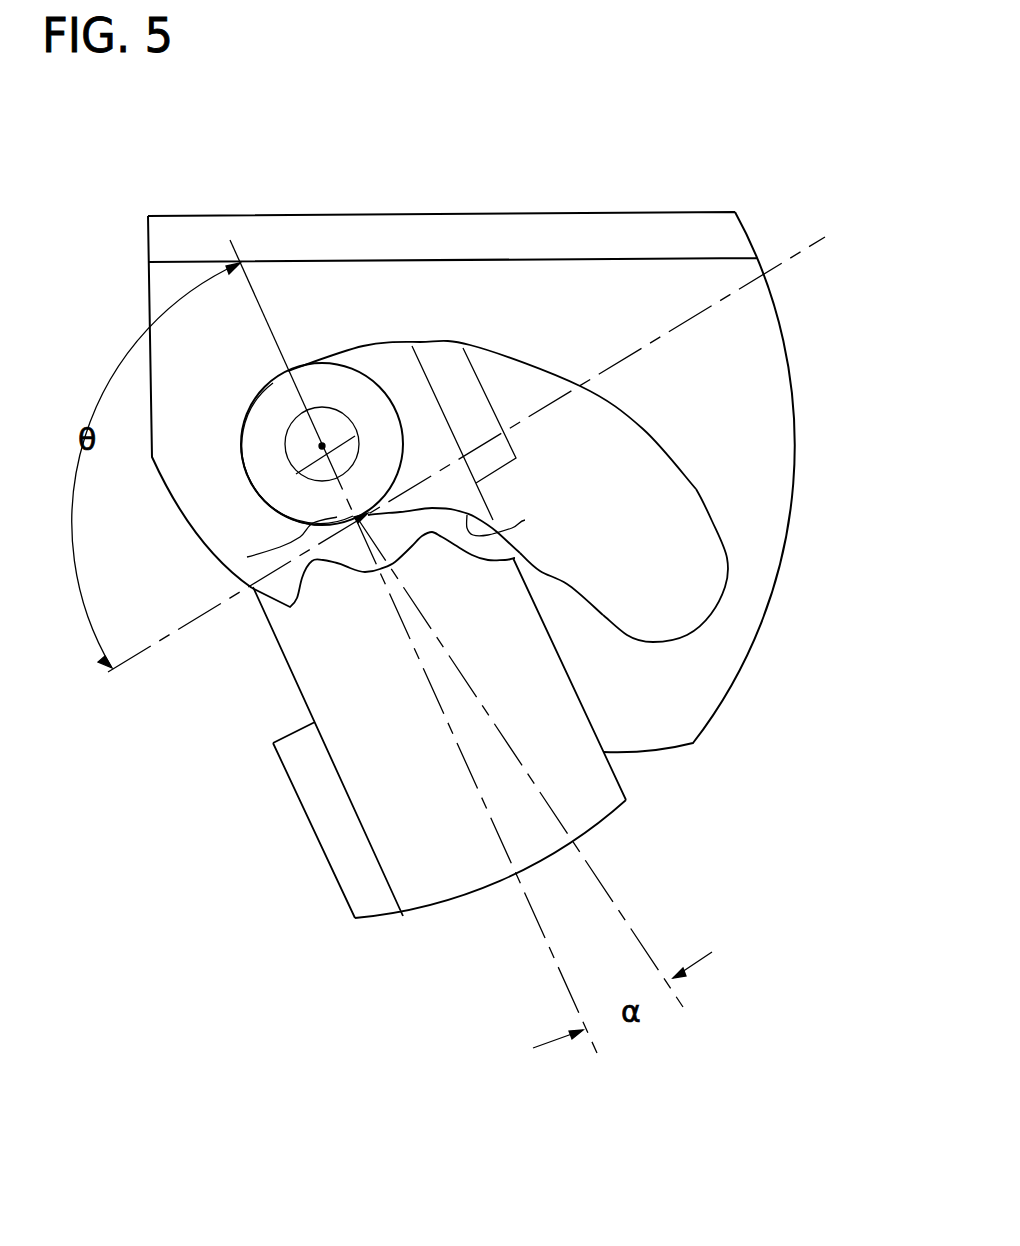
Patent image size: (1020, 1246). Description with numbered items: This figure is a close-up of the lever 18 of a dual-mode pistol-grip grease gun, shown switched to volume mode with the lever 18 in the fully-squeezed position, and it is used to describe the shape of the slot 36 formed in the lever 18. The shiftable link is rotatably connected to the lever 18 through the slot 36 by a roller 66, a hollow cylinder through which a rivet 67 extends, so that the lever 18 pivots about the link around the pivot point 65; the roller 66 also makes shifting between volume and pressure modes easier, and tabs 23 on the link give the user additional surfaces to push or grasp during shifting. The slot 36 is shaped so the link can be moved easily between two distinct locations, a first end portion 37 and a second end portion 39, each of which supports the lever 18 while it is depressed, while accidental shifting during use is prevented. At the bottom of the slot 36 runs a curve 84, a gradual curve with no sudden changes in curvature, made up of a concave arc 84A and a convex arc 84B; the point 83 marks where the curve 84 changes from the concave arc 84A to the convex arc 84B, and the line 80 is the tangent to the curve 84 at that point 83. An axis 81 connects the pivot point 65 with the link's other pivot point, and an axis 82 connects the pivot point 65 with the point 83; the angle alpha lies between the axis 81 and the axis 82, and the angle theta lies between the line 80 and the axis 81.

The lever 18 is at (450, 297).
The line 80 is at (797, 257).
The first end portion 37 is at (265, 385).
The roller 66 is at (262, 446).
The rivet 67 is at (278, 495).
The pivot point 65 is at (340, 434).
The tabs 23 is at (460, 390).
The slot 36 is at (617, 453).
The second end portion 39 is at (693, 597).
The point 83 is at (372, 522).
The convex arc 84B is at (525, 520).
The concave arc 84A is at (247, 557).
The curve 84 is at (345, 528).
The axis 81 is at (555, 963).
The axis 82 is at (630, 918).